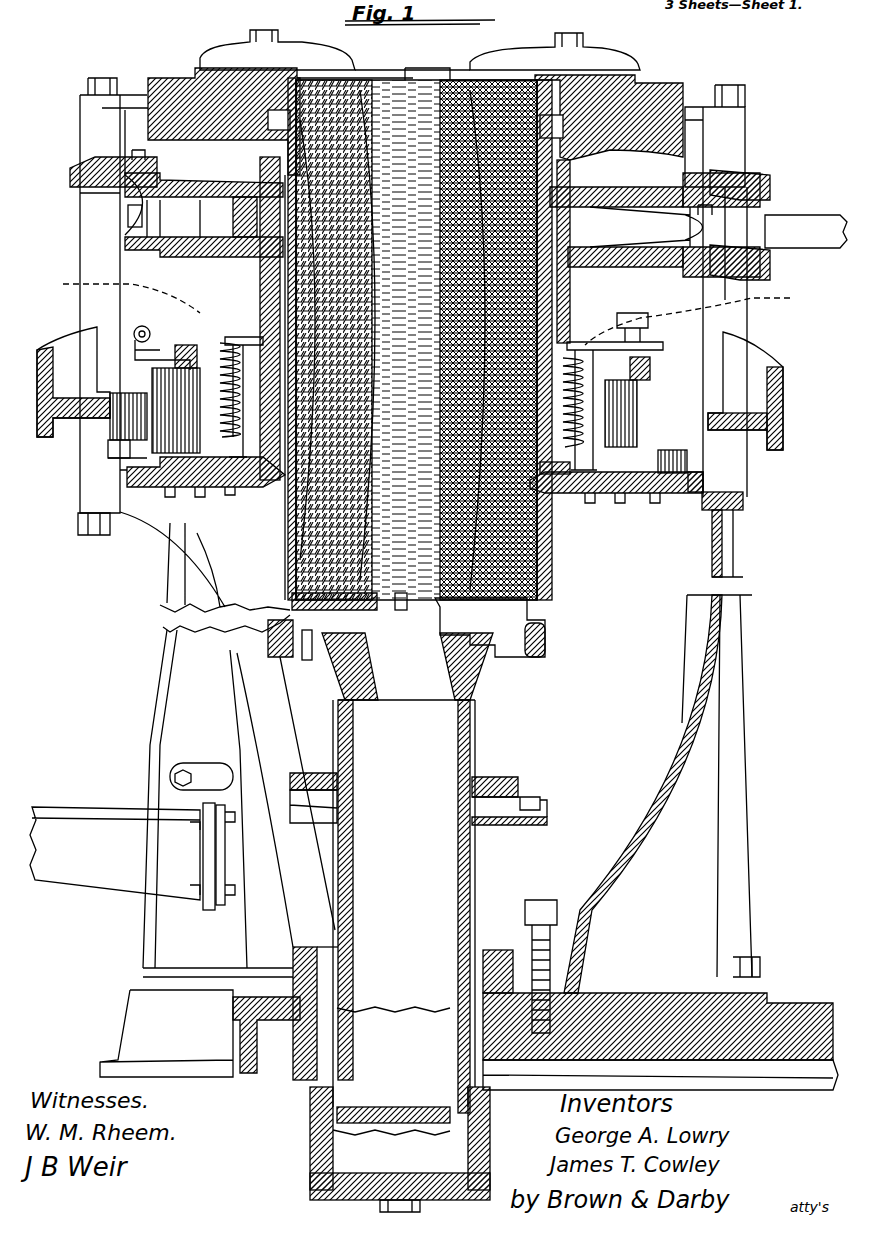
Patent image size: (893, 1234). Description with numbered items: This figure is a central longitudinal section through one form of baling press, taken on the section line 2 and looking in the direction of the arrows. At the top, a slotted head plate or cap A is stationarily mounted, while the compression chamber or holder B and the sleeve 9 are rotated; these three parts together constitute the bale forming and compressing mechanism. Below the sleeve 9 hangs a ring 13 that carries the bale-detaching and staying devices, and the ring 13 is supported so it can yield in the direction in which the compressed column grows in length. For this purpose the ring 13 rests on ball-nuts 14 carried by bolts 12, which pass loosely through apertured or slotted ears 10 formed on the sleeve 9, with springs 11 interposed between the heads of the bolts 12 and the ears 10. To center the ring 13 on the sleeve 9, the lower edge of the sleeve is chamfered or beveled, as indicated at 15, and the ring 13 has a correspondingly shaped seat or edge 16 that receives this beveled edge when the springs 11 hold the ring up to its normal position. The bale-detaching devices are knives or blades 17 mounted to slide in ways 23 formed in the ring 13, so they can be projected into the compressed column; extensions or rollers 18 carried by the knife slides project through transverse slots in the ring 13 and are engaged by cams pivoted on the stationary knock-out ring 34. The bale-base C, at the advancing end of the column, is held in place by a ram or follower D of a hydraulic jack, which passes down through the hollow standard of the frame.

The slotted head plate or cap A is at (585, 62).
The compression chamber or holder B is at (636, 70).
The bale-base C is at (545, 643).
The ram or follower D is at (478, 668).
The section line 2 is at (50, 268).
The sleeve 9 is at (416, 340).
The apertured or slotted ears 10 is at (215, 420).
The springs 11 is at (225, 348).
The bolts 12 is at (409, 335).
The ring 13 is at (115, 470).
The ball-nuts 14 is at (220, 482).
The chamfered or beveled lower edge of the sleeve 15 is at (432, 340).
The correspondingly-shaped seat or edge 16 is at (552, 482).
The knives or blades 17 is at (170, 490).
The extensions or rollers 18 is at (115, 455).
The ways 23 is at (185, 480).
The knock-out ring 34 is at (70, 353).